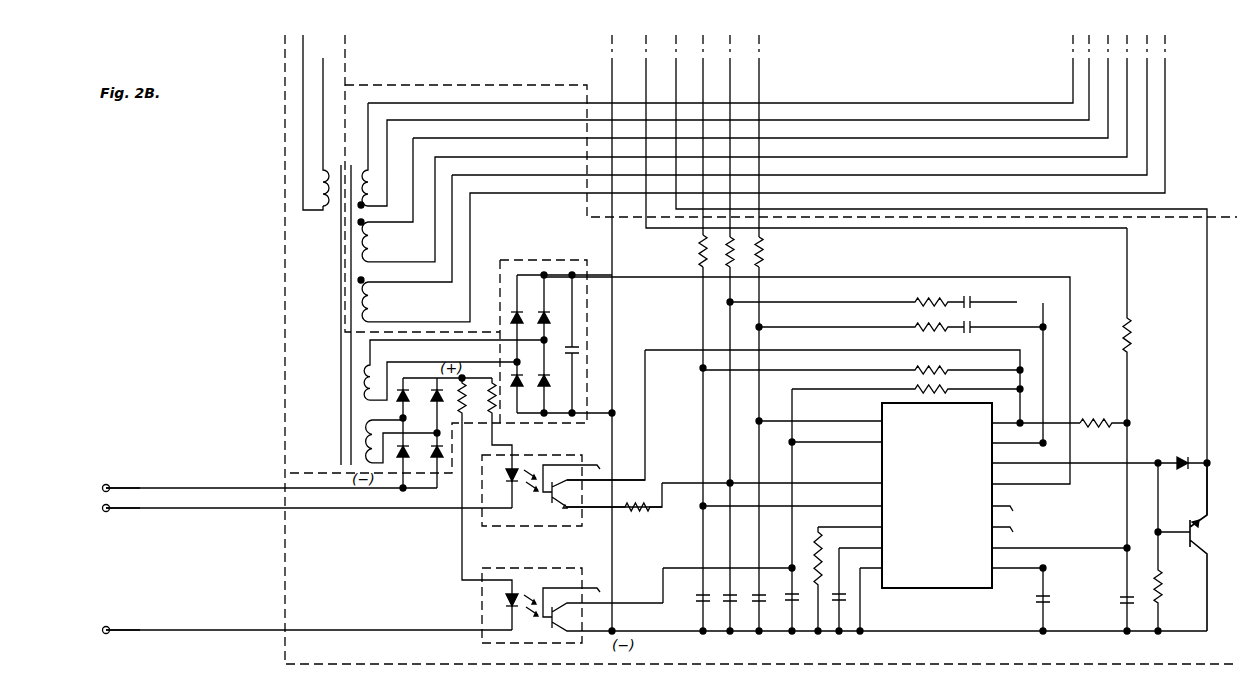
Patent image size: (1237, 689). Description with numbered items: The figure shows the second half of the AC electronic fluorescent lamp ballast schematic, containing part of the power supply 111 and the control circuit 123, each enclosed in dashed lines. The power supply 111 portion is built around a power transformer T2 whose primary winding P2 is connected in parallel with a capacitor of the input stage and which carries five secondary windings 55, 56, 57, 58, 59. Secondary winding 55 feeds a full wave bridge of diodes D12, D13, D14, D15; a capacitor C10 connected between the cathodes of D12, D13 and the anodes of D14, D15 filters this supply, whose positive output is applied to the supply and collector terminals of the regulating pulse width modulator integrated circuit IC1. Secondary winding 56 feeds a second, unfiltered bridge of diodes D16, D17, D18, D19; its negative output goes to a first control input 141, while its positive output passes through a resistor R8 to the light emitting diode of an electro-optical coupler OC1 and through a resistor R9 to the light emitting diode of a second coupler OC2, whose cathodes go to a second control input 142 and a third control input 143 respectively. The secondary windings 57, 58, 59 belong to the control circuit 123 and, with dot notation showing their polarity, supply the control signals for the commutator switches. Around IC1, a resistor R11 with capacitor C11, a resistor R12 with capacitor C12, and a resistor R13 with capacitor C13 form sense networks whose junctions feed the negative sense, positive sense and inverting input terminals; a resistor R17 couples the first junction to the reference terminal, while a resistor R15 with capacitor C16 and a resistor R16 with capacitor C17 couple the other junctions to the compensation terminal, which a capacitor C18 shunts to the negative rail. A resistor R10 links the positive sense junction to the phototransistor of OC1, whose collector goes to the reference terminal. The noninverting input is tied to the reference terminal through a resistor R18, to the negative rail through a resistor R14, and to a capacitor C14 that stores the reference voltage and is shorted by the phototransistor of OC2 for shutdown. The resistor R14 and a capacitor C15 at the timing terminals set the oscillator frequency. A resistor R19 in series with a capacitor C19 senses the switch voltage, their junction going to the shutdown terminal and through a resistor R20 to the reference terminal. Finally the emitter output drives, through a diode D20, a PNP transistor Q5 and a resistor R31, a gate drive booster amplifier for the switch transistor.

The power supply 111 is at (285, 270).
The power transformer T2 is at (345, 310).
The primary winding P2 is at (320, 183).
The secondary winding 57 is at (380, 170).
The secondary winding 58 is at (375, 243).
The secondary winding 59 is at (375, 300).
The secondary winding 55 is at (355, 380).
The secondary winding 56 is at (355, 441).
The diode D12 is at (512, 305).
The diode D13 is at (546, 305).
The diode D14 is at (555, 372).
The diode D15 is at (513, 374).
The capacitor C10 is at (580, 335).
The diode D16 is at (404, 386).
The diode D17 is at (438, 386).
The diode D18 is at (397, 496).
The diode D19 is at (434, 496).
The resistor R8 is at (500, 418).
The resistor R9 is at (472, 415).
The resistor R10 is at (614, 506).
The resistor R11 is at (700, 262).
The resistor R12 is at (727, 238).
The resistor R13 is at (763, 252).
The resistor R14 is at (812, 545).
The resistor R15 is at (847, 294).
The resistor R16 is at (861, 320).
The resistor R17 is at (861, 362).
The resistor R18 is at (955, 389).
The resistor R19 is at (1144, 429).
The resistor R20 is at (1103, 414).
The resistor R31 is at (1175, 547).
The capacitor C11 is at (700, 608).
The capacitor C12 is at (728, 608).
The capacitor C13 is at (757, 608).
The capacitor C14 is at (795, 607).
The capacitor C15 is at (842, 607).
The capacitor C16 is at (990, 294).
The capacitor C17 is at (1003, 320).
The capacitor C18 is at (1025, 599).
The capacitor C19 is at (1111, 599).
The electro-optical coupler OC1 is at (522, 520).
The electro-optical coupler OC2 is at (542, 578).
The regulating pulse width modulator integrated circuit IC1 is at (925, 588).
The diode D20 is at (1182, 454).
The PNP transistor Q5 is at (1187, 547).
The first control input 141 is at (103, 481).
The second control input 142 is at (103, 512).
The third control input 143 is at (103, 626).
The control circuit 123 is at (950, 658).